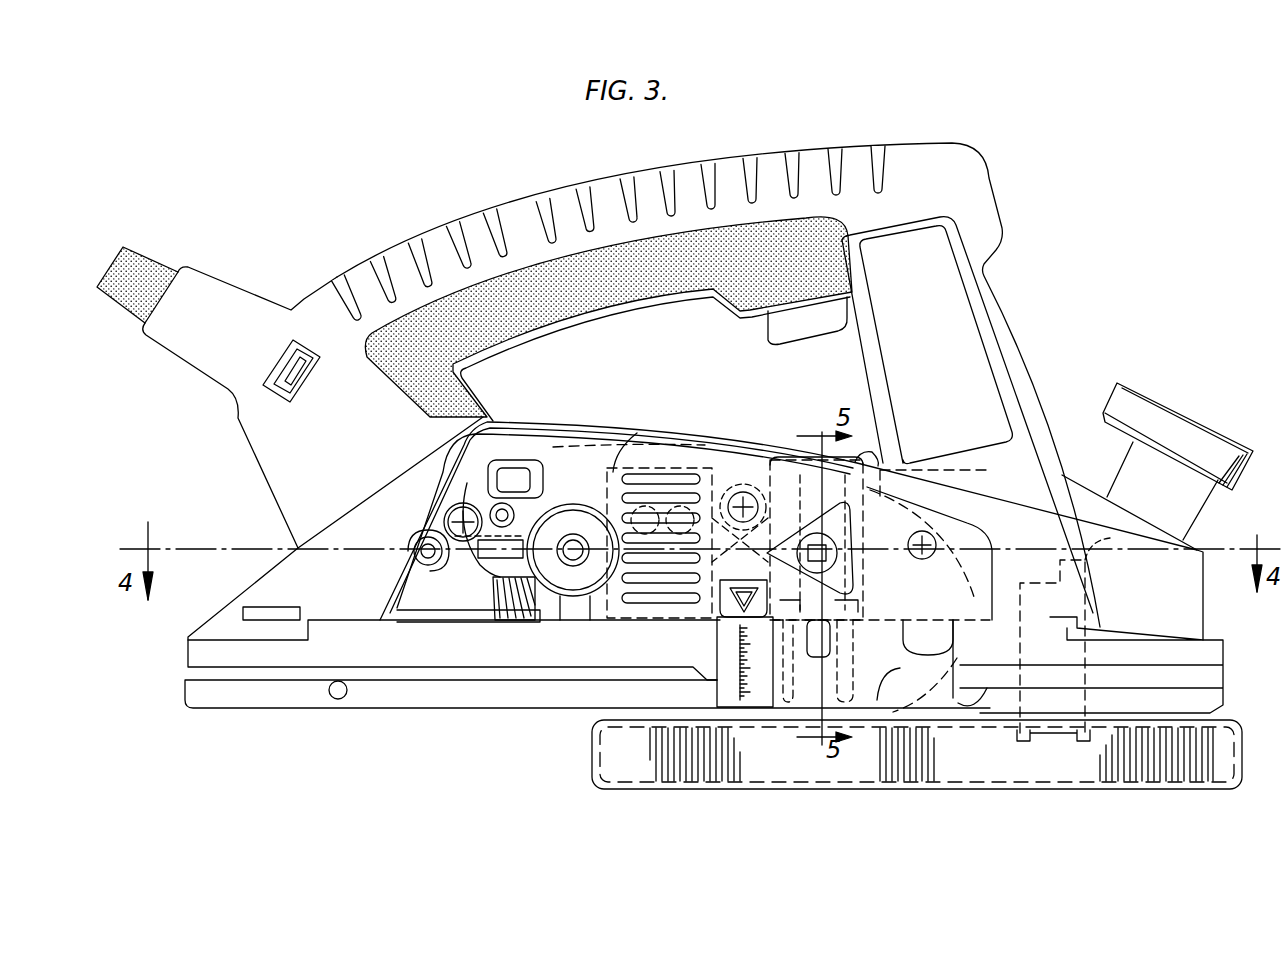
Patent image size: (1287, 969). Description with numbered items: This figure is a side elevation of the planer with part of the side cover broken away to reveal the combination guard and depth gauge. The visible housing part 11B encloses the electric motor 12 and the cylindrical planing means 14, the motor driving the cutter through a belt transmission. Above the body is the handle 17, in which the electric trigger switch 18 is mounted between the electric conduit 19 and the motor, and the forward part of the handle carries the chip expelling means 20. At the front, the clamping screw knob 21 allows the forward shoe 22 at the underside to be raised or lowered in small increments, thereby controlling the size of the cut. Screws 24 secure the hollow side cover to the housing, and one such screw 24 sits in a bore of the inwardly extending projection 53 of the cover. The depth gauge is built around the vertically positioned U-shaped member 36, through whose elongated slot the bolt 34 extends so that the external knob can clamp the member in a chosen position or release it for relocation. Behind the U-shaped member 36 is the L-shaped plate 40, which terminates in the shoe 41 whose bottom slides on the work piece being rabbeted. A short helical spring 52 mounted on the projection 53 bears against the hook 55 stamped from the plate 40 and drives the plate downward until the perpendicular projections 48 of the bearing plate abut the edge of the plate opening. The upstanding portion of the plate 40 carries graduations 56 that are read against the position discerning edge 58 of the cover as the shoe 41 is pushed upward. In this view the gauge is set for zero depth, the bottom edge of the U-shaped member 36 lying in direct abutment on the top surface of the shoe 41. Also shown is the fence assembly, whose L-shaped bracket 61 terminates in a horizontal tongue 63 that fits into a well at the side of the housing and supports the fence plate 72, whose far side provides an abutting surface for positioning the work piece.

The housing part 11B is at (352, 587).
The electric motor 12 is at (520, 458).
The cylindrical planing means 14 is at (932, 712).
The handle 17 is at (598, 192).
The electric trigger switch 18 is at (776, 322).
The electric conduit 19 is at (148, 275).
The chip expelling means 20 is at (944, 356).
The clamping screw knob 21 is at (1140, 410).
The forward shoe 22 is at (1212, 706).
The screws 24 is at (416, 549).
The bolt 34 is at (930, 535).
The U-shaped member 36 is at (878, 455).
The L-shaped plate 40 is at (865, 712).
The shoe 41 is at (972, 706).
The perpendicular projections 48 is at (880, 592).
The helical spring 52 is at (740, 548).
The inwardly extending projection 53 is at (768, 456).
The hook 55 is at (862, 570).
The graduations 56 is at (714, 684).
The position discerning edge 58 is at (716, 632).
The L-shaped bracket 61 is at (1086, 596).
The horizontal tongue 63 is at (1080, 545).
The plate 72 is at (1074, 774).